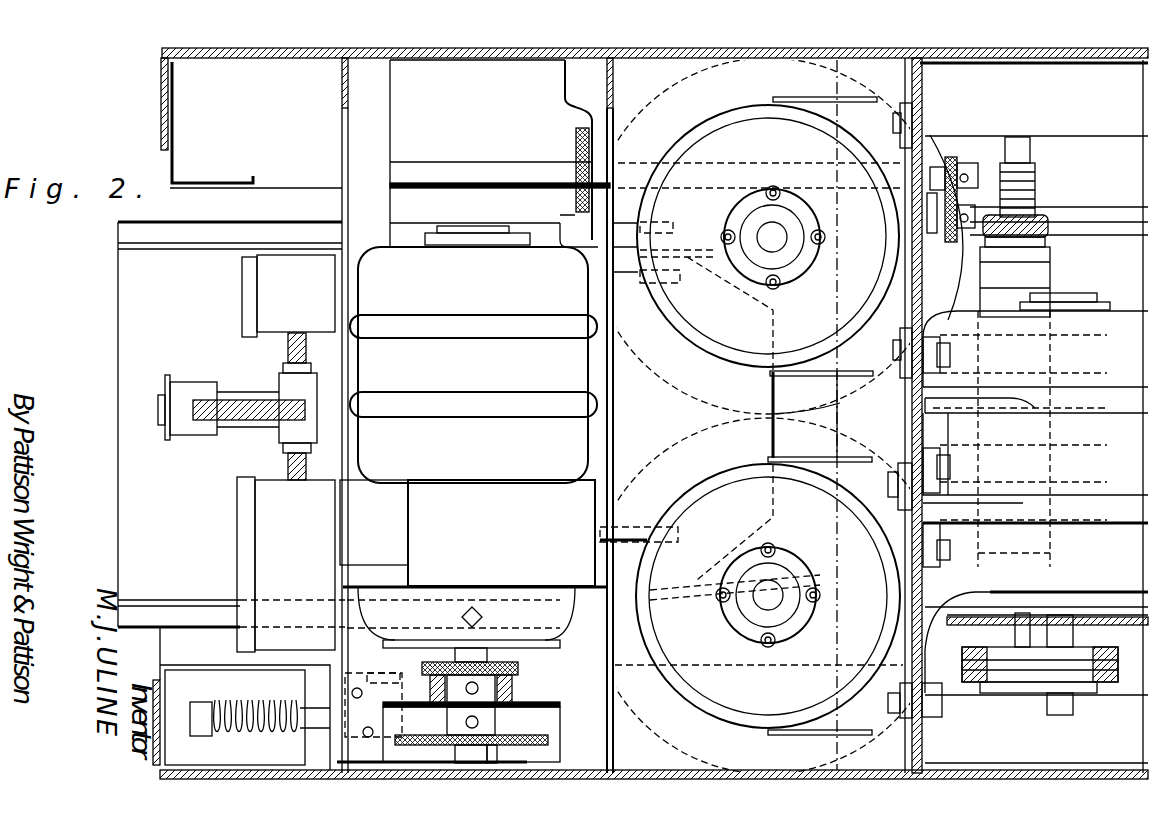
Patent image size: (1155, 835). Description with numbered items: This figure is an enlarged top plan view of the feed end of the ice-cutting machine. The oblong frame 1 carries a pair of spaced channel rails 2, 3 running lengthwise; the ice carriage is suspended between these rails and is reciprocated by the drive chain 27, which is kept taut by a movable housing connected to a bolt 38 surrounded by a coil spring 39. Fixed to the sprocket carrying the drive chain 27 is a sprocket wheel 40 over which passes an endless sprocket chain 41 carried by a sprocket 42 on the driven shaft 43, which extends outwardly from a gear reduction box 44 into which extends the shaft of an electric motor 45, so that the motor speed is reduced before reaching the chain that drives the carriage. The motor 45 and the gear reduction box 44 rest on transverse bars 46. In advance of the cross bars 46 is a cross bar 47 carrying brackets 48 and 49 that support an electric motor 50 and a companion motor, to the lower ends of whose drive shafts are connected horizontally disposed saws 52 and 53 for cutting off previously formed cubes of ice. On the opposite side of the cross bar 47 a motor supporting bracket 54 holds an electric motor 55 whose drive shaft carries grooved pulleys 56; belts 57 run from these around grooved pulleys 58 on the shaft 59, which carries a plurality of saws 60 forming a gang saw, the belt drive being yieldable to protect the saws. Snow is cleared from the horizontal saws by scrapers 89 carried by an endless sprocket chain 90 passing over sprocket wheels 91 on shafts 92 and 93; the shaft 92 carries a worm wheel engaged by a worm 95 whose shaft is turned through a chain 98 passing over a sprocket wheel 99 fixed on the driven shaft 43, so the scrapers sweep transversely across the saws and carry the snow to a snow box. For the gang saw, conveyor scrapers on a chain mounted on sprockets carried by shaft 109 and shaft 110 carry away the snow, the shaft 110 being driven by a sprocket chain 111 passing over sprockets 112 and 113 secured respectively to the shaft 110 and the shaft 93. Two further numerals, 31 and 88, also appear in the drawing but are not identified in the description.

The oblong frame 1 is at (160, 80).
The channel rail 2 is at (230, 407).
The channel rail 3 is at (241, 697).
The drive chain 27 is at (448, 734).
The guide rod 31 is at (345, 655).
The bolt 38 is at (340, 762).
The coil spring 39 is at (260, 704).
The sprocket wheel 40 is at (523, 747).
The endless sprocket chain 41 is at (545, 743).
The sprocket 42 is at (440, 743).
The driven shaft 43 is at (470, 762).
The gear reduction box 44 is at (467, 533).
The electric motor 45 is at (473, 354).
The transverse bars 46 is at (355, 88).
The cross bar 47 is at (930, 75).
The bracket 48 is at (880, 240).
The bracket 49 is at (879, 590).
The electric motor 50 is at (760, 236).
The horizontally disposed saw 52 is at (768, 216).
The horizontally disposed saw 53 is at (820, 416).
The motor supporting bracket 54 is at (835, 407).
The electric motor 55 is at (1036, 422).
The grooved pulleys 56 is at (1102, 680).
The belts 57 is at (1047, 653).
The grooved pulleys 58 is at (990, 650).
The shaft 59 is at (1013, 637).
The saws 60 is at (1087, 367).
The adjusting screw 88 is at (551, 416).
The scrapers 89 is at (628, 280).
The endless sprocket chain 90 is at (575, 202).
The sprocket wheels 91 is at (577, 140).
The shaft 92 is at (663, 693).
The shaft 93 is at (430, 170).
The worm 95 is at (471, 725).
The chain 98 is at (418, 663).
The sprocket wheel 99 is at (497, 663).
The shaft 109 is at (1107, 613).
The shaft 110 is at (1123, 192).
The sprocket chain 111 is at (975, 198).
The sprocket 112 is at (945, 160).
The sprocket 113 is at (955, 237).